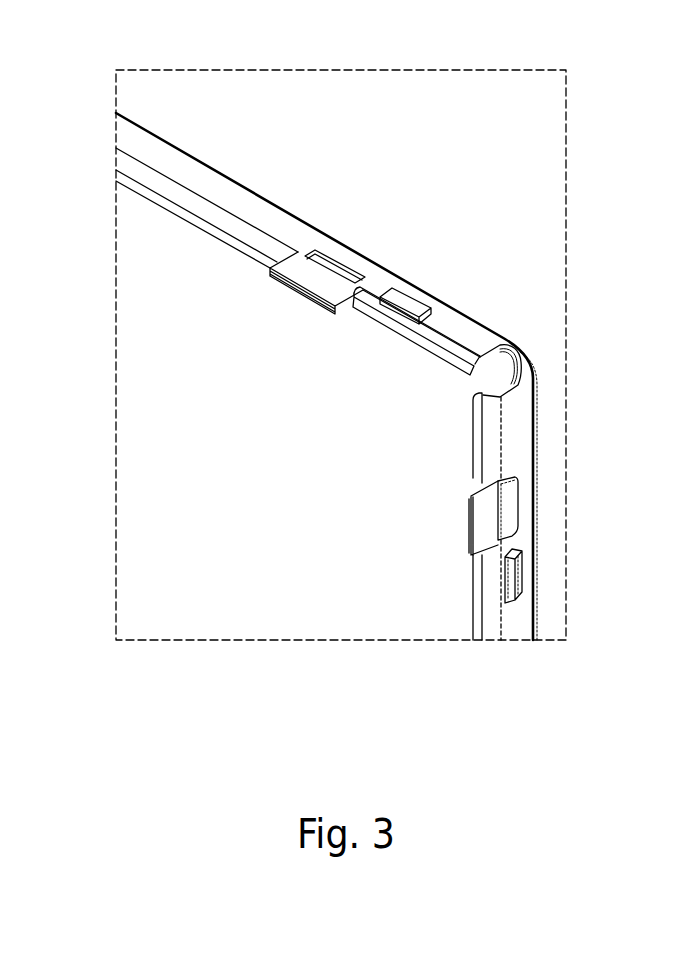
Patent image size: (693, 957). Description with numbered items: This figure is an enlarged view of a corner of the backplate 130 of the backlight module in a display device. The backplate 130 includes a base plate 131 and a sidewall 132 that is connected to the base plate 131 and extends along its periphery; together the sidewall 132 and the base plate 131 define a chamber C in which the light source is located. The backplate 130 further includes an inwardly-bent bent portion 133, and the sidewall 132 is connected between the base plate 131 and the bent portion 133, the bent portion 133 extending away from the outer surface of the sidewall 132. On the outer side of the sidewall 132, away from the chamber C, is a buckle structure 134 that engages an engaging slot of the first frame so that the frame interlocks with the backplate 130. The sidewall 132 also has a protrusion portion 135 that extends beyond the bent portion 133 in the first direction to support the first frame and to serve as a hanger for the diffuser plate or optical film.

The backplate 130 is at (236, 126).
The base plate 131 is at (407, 620).
The sidewall 132 is at (517, 621).
The bent portion 133 is at (488, 425).
The buckle structure 134 is at (517, 575).
The protrusion portion 135 is at (310, 283).
The chamber C is at (145, 329).